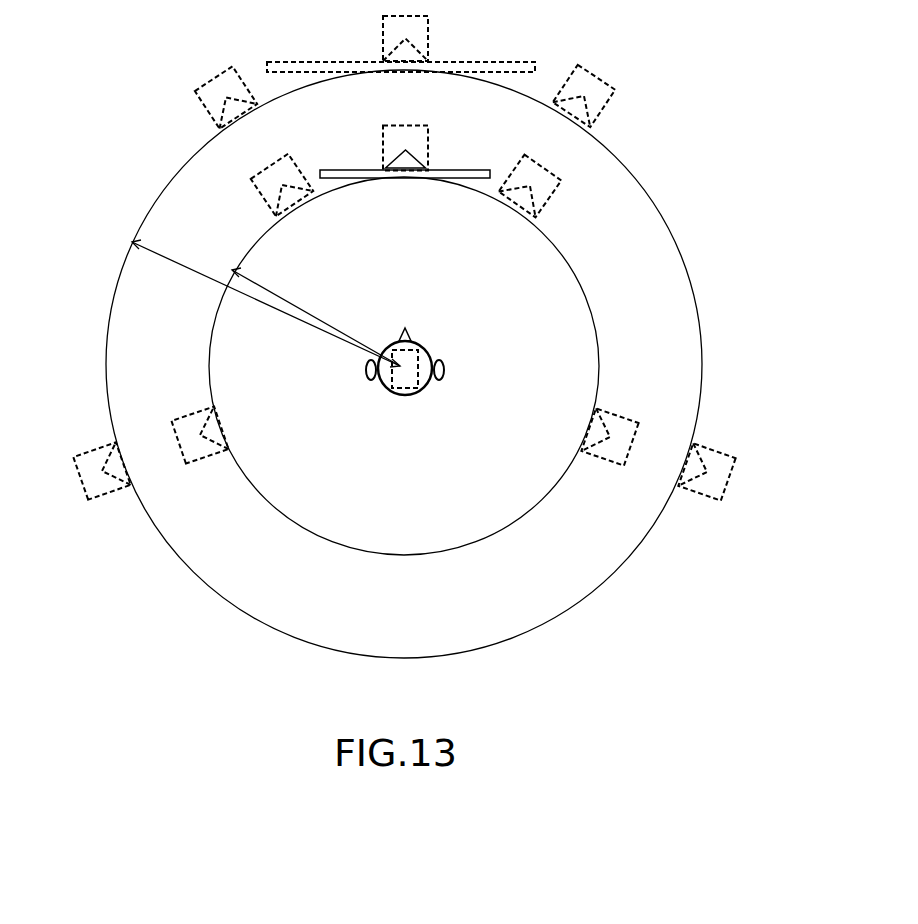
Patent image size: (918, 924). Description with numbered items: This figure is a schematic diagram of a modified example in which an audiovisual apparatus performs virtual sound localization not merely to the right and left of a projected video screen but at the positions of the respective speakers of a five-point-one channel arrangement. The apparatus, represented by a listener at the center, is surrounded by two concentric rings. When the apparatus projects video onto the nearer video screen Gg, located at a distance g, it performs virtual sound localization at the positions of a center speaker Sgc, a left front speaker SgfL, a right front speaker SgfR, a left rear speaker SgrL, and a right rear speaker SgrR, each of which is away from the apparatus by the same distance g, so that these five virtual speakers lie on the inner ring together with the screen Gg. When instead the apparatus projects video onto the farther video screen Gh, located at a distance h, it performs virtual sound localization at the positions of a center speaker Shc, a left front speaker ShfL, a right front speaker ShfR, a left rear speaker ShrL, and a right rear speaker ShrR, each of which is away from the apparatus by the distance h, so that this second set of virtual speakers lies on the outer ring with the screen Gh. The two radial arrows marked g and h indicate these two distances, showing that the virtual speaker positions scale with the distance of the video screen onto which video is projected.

The center speaker Shc is at (382, 30).
The left front speaker ShfL is at (197, 100).
The right front speaker ShfR is at (613, 100).
The left rear speaker ShrL is at (92, 498).
The right rear speaker ShrR is at (697, 498).
The center speaker Sgc is at (382, 140).
The left front speaker SgfL is at (252, 183).
The right front speaker SgfR is at (555, 193).
The left rear speaker SgrL is at (193, 462).
The right rear speaker SgrR is at (603, 463).
The video screen Gh is at (457, 72).
The video screen Gg is at (442, 178).
The distance h is at (266, 303).
The distance g is at (316, 317).